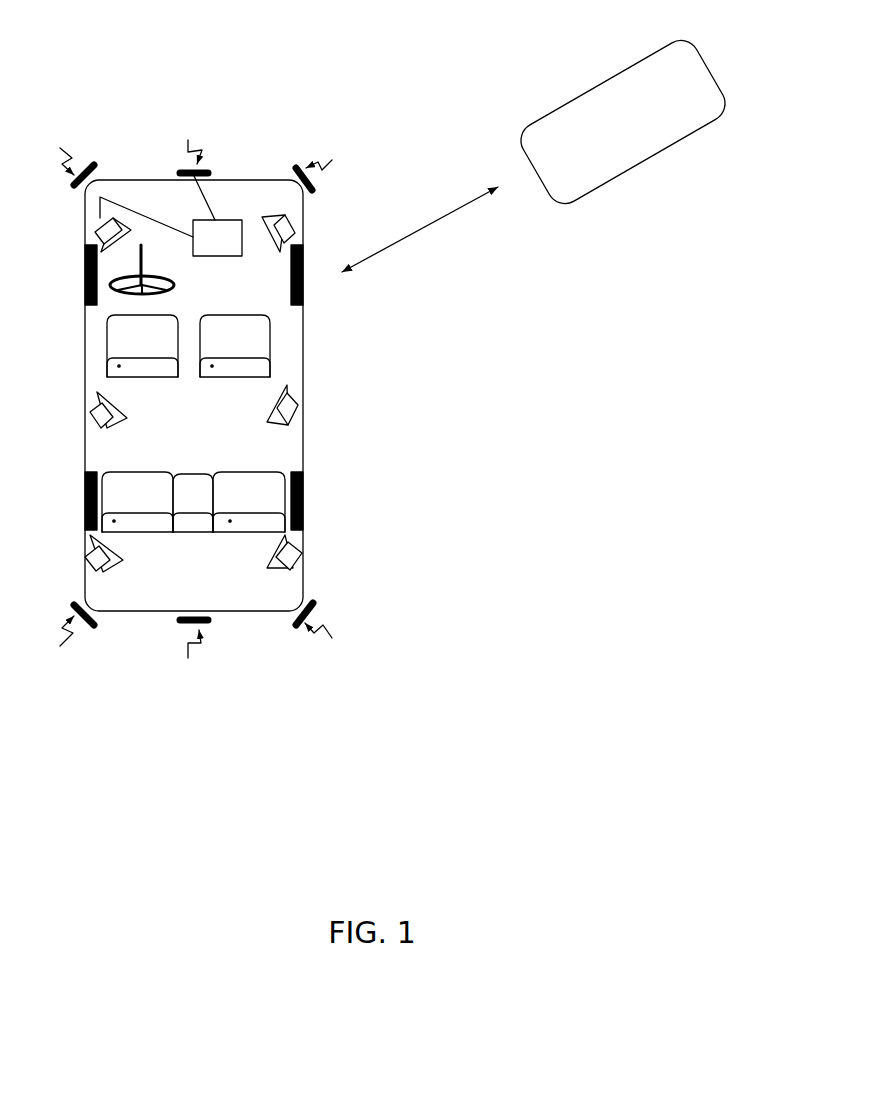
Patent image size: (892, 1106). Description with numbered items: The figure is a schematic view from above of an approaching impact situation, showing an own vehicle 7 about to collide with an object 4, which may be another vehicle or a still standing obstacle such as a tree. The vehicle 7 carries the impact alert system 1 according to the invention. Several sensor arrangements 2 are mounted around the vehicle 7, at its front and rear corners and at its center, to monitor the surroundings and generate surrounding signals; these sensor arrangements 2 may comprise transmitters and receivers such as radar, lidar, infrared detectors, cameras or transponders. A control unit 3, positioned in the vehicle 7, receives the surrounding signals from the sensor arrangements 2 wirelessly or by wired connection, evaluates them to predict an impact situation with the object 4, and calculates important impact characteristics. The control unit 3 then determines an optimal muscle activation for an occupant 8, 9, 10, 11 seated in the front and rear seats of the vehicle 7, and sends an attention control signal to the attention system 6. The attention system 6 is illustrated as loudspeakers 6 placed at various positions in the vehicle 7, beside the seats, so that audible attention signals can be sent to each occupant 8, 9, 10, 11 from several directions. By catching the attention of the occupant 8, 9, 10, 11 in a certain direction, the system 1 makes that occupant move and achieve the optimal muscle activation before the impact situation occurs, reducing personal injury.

The impact alert system 1 is at (508, 562).
The sensor arrangement 2 is at (280, 147).
The control unit 3 is at (171, 216).
The object 4 is at (537, 153).
The attention system (loudspeakers) 6 is at (90, 223).
The vehicle 7 is at (85, 328).
The occupant 8 is at (142, 346).
The occupant 9 is at (235, 346).
The occupant 10 is at (137, 502).
The occupant 11 is at (249, 502).